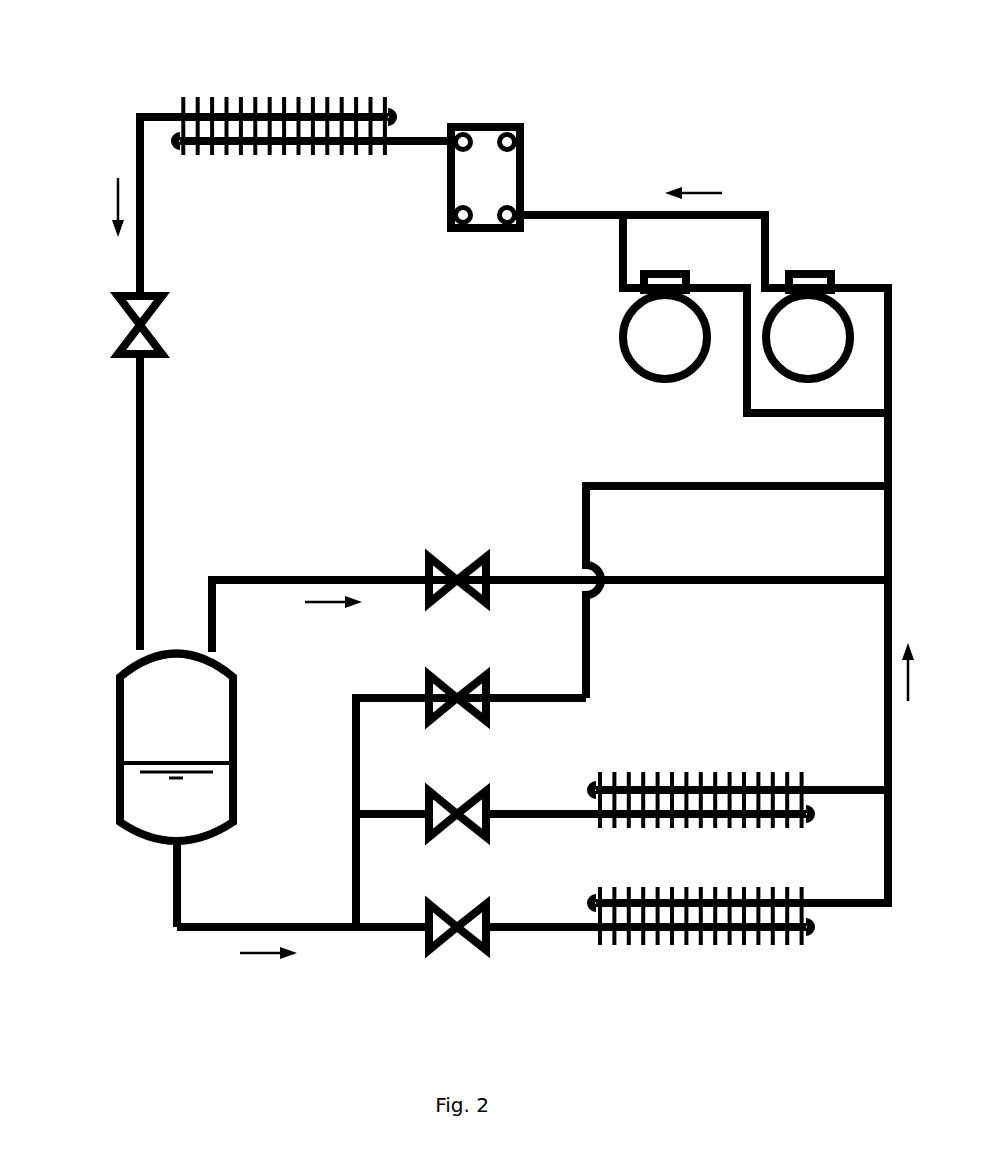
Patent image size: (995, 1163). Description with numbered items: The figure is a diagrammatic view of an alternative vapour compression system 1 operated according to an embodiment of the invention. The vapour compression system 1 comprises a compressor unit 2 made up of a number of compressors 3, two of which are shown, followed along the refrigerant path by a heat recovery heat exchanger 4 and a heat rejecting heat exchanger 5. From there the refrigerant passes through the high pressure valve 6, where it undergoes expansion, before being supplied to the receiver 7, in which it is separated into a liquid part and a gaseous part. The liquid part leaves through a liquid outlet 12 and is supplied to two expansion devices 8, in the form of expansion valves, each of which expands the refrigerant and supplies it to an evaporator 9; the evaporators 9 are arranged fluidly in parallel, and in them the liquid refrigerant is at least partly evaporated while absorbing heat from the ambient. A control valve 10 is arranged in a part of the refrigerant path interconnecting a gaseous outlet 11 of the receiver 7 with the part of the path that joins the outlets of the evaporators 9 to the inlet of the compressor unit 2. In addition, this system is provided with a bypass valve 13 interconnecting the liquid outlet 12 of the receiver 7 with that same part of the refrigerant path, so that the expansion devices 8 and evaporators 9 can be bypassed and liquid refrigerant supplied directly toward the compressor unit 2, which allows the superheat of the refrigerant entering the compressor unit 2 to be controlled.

The vapour compression system 1 is at (760, 122).
The compressor unit 2 is at (868, 327).
The compressor 3 is at (808, 325).
The heat recovery heat exchanger 4 is at (482, 155).
The heat rejecting heat exchanger 5 is at (265, 108).
The high pressure valve 6 is at (138, 305).
The receiver 7 is at (149, 707).
The expansion device 8 is at (483, 800).
The evaporator 9 is at (679, 782).
The control valve 10 is at (428, 563).
The gaseous outlet 11 is at (213, 660).
The liquid outlet 12 is at (172, 845).
The bypass valve 13 is at (436, 700).